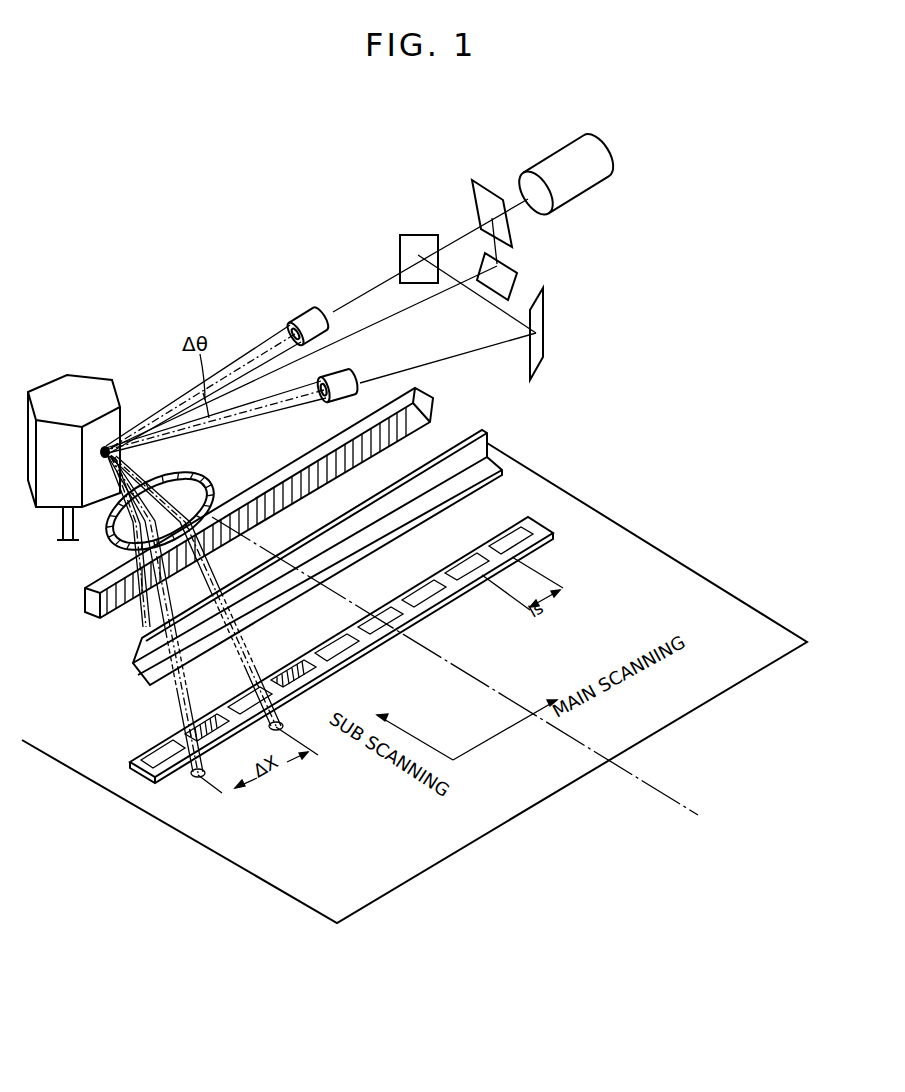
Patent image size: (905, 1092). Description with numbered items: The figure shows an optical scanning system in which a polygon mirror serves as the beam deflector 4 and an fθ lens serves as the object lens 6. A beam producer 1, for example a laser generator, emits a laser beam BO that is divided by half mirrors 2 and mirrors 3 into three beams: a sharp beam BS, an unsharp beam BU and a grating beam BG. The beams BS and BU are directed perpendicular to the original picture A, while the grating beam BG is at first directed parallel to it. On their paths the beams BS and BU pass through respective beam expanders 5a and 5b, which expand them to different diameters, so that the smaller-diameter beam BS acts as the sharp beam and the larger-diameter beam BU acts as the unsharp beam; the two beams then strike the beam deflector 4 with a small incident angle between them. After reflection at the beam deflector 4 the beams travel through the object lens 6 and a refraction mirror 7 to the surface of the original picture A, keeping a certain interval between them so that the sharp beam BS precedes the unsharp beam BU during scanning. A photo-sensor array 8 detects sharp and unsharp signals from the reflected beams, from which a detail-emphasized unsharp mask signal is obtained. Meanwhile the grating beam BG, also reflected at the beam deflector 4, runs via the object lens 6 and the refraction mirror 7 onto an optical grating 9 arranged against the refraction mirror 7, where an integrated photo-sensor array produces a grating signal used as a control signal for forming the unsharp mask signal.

The beam producer 1 is at (556, 162).
The half mirrors 2 is at (483, 194).
The mirrors 3 is at (513, 281).
The beam deflector 4 is at (35, 383).
The beam expander 5a is at (343, 397).
The beam expander 5b is at (307, 317).
The object lens 6 is at (193, 483).
The refraction mirror 7 is at (142, 683).
The photo-sensor array 8 is at (138, 770).
The optical grating 9 is at (84, 610).
The original picture A is at (410, 855).
The laser beam BO is at (513, 211).
The unsharp beam BU is at (360, 293).
The grating beam BG is at (393, 323).
The sharp beam BS is at (445, 363).